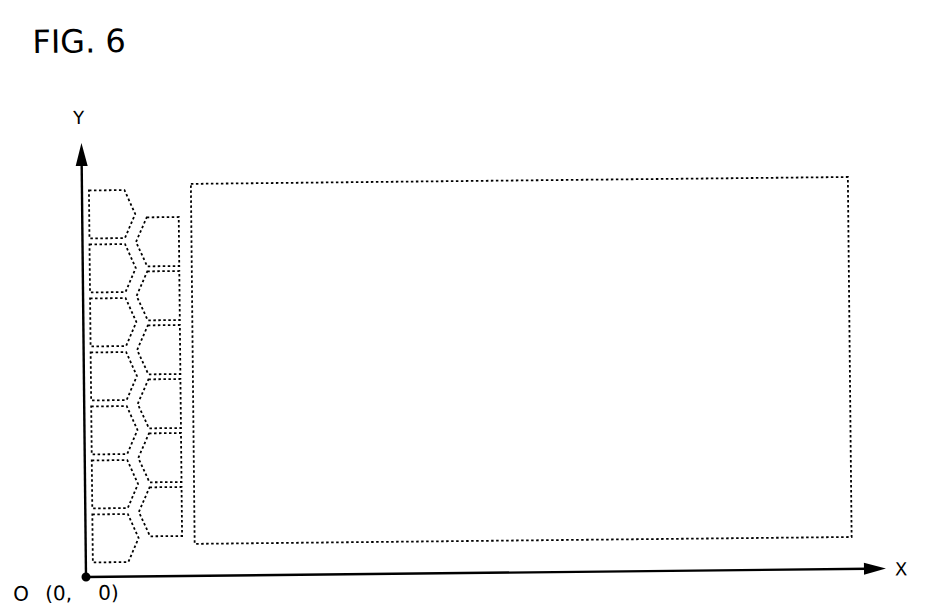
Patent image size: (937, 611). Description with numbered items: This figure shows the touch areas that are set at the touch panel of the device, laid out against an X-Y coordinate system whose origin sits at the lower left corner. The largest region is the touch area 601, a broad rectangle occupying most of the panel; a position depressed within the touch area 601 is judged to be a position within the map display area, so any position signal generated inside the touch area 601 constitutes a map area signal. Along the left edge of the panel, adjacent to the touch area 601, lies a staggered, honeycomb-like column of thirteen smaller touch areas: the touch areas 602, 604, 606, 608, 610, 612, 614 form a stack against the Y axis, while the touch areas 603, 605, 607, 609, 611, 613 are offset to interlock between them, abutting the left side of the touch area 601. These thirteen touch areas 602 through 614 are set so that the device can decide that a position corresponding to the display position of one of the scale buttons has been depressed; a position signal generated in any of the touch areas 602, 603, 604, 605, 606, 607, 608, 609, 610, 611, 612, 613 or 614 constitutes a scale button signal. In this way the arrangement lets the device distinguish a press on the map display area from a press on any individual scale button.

The touch area 601 is at (536, 217).
The touch area 602 is at (119, 216).
The touch area 603 is at (160, 244).
The touch area 604 is at (119, 270).
The touch area 605 is at (160, 298).
The touch area 606 is at (119, 324).
The touch area 607 is at (160, 352).
The touch area 608 is at (119, 378).
The touch area 609 is at (160, 406).
The touch area 610 is at (119, 432).
The touch area 611 is at (160, 460).
The touch area 612 is at (119, 486).
The touch area 613 is at (160, 514).
The touch area 614 is at (119, 540).